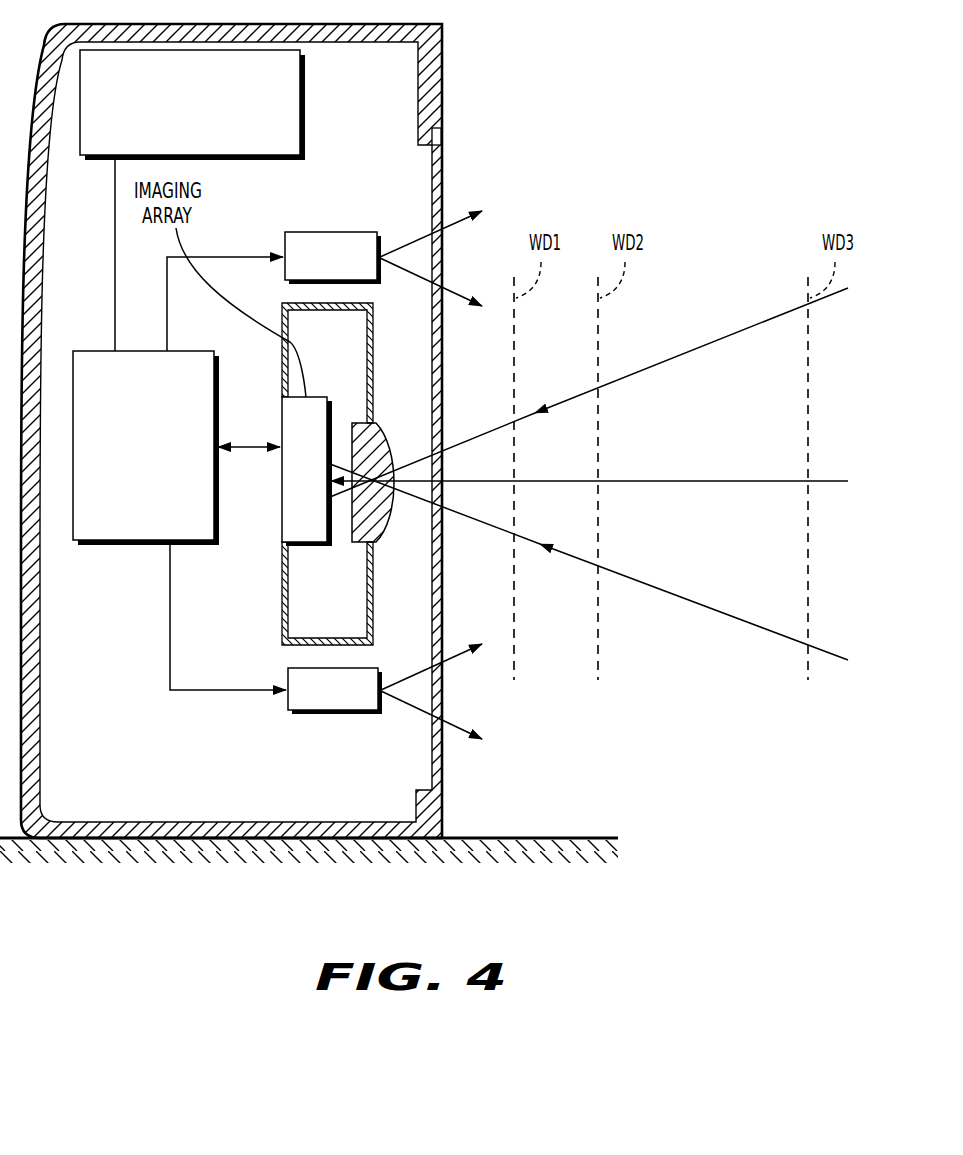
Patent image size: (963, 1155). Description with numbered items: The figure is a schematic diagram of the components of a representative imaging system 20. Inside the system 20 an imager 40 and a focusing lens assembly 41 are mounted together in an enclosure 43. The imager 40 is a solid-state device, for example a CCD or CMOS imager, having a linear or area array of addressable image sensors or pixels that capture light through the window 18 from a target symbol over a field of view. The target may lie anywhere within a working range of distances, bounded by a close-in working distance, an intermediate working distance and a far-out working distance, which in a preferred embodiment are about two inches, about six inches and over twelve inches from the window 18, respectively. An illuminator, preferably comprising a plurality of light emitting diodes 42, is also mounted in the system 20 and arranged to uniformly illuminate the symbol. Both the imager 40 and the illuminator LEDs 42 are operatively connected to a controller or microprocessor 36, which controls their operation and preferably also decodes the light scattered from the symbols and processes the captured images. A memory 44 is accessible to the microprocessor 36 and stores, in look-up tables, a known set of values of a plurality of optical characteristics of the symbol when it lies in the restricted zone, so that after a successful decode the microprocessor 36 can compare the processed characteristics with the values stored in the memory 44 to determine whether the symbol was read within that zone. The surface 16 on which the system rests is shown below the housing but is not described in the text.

The system 20 is at (445, 23).
The window 18 is at (445, 151).
The memory 44 is at (305, 107).
The microprocessor 36 is at (86, 546).
The enclosure 43 is at (375, 335).
The light emitting diodes 42 is at (345, 248).
The imager 40 is at (283, 507).
The focusing lens assembly 41 is at (385, 538).
The support surface 16 is at (522, 837).